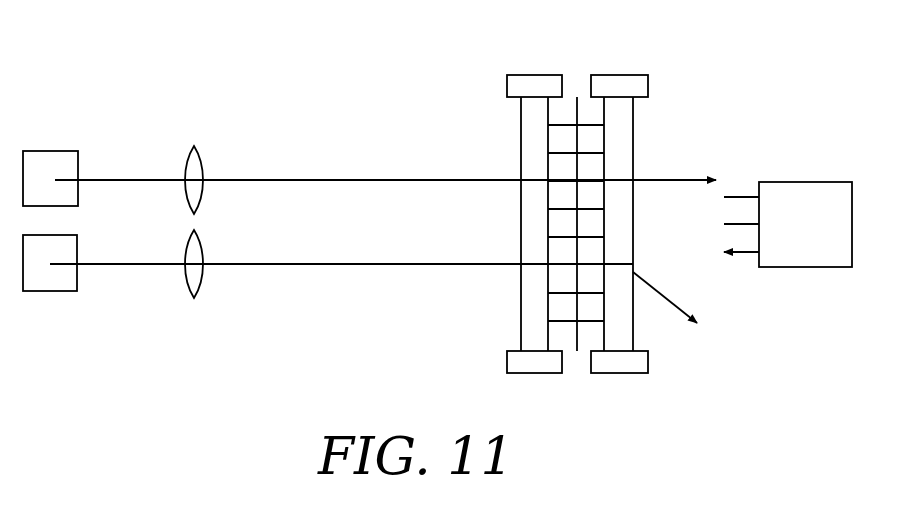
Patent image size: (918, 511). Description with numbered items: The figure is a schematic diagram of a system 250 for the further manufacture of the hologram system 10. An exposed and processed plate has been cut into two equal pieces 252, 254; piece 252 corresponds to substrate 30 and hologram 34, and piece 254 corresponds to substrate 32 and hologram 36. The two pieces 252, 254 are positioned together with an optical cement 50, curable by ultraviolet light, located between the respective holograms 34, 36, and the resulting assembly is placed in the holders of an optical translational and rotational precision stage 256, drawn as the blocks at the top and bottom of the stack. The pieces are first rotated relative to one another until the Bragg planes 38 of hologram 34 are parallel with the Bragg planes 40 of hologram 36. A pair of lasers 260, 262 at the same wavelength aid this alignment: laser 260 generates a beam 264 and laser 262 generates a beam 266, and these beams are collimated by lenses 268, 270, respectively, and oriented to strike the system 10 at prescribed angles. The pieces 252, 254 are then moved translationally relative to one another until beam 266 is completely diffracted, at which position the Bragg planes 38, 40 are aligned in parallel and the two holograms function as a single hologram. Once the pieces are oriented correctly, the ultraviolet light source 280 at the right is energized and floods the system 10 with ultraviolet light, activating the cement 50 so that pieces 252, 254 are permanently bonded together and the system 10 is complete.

The hologram system 10 is at (528, 166).
The substrate 30 is at (520, 294).
The substrate 32 is at (620, 199).
The hologram 34 is at (557, 308).
The hologram 36 is at (595, 222).
The Bragg planes 38 is at (560, 264).
The Bragg planes 40 is at (590, 264).
The optical cement 50 is at (577, 97).
The system 250 is at (328, 354).
The piece 252 is at (530, 118).
The piece 254 is at (622, 120).
The optical translational and rotational precision stage 256 is at (520, 75).
The laser 260 is at (52, 150).
The laser 262 is at (50, 296).
The beam 264 is at (133, 180).
The beam 266 is at (140, 265).
The lens 268 is at (200, 160).
The lens 270 is at (200, 285).
The ultraviolet light source 280 is at (805, 182).